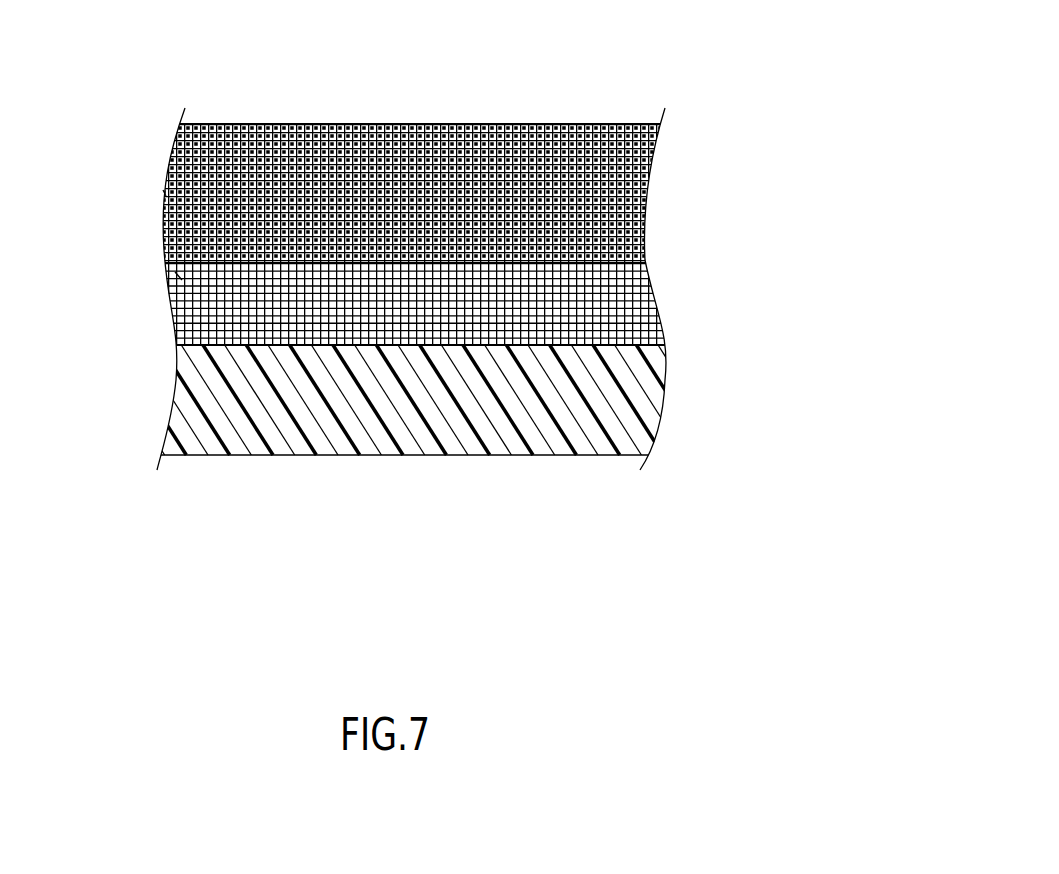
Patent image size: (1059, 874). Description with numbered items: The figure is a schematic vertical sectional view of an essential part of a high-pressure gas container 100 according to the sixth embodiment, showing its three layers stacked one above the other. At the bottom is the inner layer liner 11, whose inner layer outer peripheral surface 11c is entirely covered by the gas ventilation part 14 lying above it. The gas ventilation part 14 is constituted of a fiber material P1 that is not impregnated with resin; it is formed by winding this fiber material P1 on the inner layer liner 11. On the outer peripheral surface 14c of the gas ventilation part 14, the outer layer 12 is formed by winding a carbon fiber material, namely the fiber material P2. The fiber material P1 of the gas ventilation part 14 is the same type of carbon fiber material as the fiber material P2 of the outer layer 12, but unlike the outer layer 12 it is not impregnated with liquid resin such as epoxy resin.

The high-pressure gas container 100 is at (635, 60).
The outer layer 12 is at (615, 200).
The outer peripheral surface of gas ventilation part 14c is at (614, 266).
The gas ventilation part 14 is at (618, 325).
The inner layer outer peripheral surface 11c is at (613, 347).
The inner layer liner 11 is at (622, 427).
The fiber material P2 is at (163, 193).
The fiber material P1 is at (180, 276).